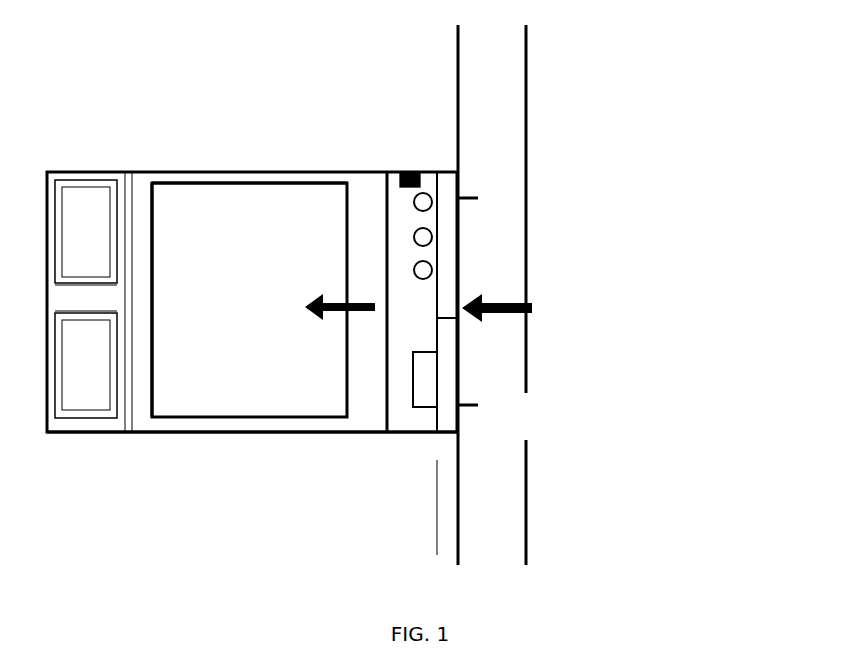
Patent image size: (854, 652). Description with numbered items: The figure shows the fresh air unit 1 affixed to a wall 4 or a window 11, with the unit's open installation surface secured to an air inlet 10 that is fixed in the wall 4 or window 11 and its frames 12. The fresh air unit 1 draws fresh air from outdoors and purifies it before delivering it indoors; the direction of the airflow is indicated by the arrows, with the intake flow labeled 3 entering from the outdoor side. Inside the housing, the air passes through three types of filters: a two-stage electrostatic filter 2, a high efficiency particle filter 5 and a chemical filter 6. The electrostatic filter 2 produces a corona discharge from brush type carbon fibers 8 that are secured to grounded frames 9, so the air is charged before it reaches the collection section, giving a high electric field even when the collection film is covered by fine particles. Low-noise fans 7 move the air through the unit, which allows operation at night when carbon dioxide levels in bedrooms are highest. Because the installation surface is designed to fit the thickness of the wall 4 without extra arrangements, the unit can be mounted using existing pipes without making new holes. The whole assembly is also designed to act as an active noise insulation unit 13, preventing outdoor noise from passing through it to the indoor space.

The fresh air unit 1 is at (252, 341).
The two-stage electrostatic filter 2 is at (249, 300).
The airflow direction 3 is at (440, 290).
The wall 4 is at (617, 295).
The high efficiency particle filter 5 is at (249, 221).
The chemical filter 6 is at (184, 300).
The fan 7 is at (93, 302).
The brush type carbon fibers 8 is at (400, 432).
The grounded frame 9 is at (409, 363).
The air inlet 10 is at (456, 325).
The window 11 is at (608, 295).
The frame 12 is at (633, 218).
The active noise insulation unit 13 is at (252, 495).